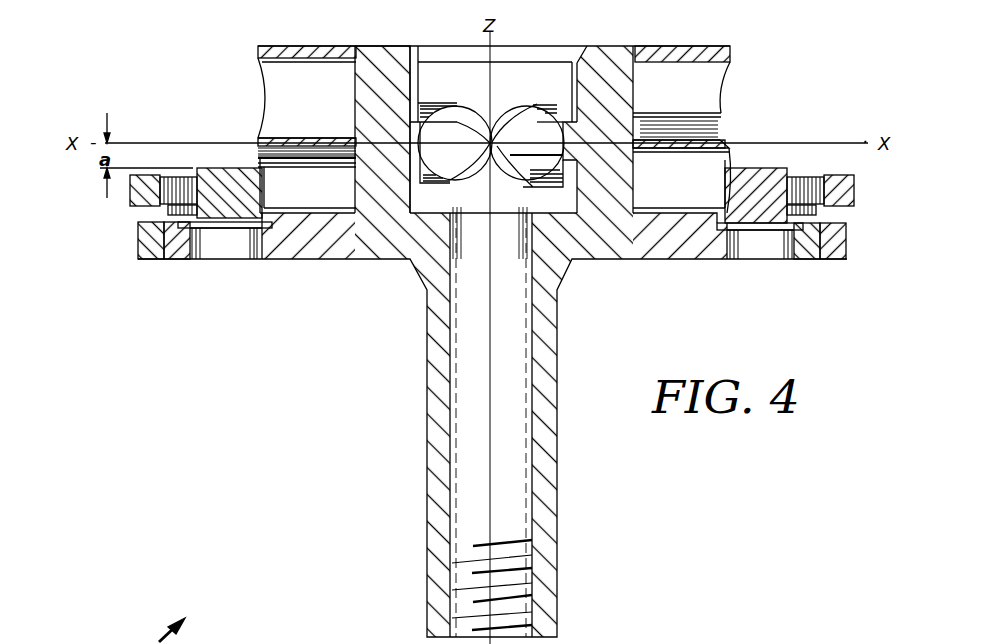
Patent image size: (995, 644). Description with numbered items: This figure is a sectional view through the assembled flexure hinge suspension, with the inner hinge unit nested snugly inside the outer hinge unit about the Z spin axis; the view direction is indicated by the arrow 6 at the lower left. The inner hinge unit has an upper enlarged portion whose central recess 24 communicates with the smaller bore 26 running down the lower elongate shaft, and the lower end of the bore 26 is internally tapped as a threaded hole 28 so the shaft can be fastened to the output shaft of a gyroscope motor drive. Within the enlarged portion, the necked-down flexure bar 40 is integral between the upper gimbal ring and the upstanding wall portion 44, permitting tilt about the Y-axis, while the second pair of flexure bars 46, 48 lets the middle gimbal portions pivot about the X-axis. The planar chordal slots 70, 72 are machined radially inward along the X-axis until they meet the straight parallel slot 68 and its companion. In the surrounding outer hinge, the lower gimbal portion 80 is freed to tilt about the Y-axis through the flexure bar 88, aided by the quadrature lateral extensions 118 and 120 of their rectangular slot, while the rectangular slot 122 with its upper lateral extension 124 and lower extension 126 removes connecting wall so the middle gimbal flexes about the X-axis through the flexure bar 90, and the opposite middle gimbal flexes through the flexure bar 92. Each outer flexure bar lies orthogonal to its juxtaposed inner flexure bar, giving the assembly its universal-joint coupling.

The viewing direction arrow 6 is at (178, 620).
The central bore or recess 24 is at (421, 74).
The smaller bore 26 is at (462, 327).
The threaded hole 28 is at (513, 592).
The flexure bar 40 is at (500, 141).
The upstanding wall portion 44 is at (492, 211).
The flexure bar 46 is at (370, 120).
The flexure bar 48 is at (607, 130).
The straight parallel slot 68 is at (567, 190).
The planar chordal slot 70 is at (368, 205).
The planar chordal slot 72 is at (620, 213).
The lower gimbal portion 80 is at (455, 160).
The flexure bar 88 is at (488, 150).
The flexure bar 90 is at (720, 139).
The flexure bar 92 is at (270, 142).
The lateral extension 118 is at (441, 117).
The lateral extension 120 is at (267, 177).
The rectangular slot 122 is at (570, 122).
The upper lateral extension 124 is at (710, 120).
The lower extension 126 is at (553, 161).